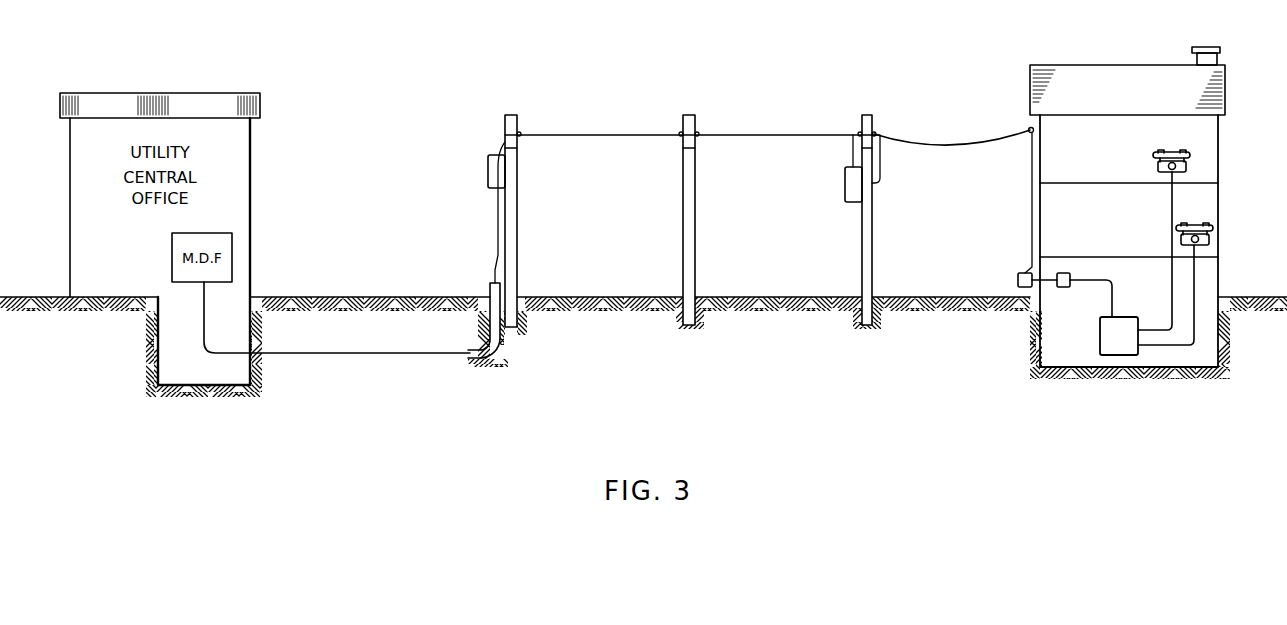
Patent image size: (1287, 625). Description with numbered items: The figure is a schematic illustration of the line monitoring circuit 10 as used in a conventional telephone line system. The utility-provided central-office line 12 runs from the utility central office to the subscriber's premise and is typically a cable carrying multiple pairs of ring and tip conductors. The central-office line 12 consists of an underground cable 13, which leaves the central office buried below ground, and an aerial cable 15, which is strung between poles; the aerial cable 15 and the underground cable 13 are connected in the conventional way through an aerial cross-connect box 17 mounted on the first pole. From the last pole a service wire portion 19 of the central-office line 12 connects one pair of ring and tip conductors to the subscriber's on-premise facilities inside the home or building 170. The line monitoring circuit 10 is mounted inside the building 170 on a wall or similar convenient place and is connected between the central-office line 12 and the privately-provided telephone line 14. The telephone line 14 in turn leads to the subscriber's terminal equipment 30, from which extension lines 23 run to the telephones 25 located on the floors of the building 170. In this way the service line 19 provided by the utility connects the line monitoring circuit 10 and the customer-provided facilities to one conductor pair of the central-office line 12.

The line monitoring circuit 10 is at (1063, 287).
The central-office line 12 is at (776, 129).
The underground cable 13 is at (370, 354).
The telephone line 14 is at (1088, 273).
The aerial cable 15 is at (604, 135).
The aerial cross-connect box 17 is at (488, 171).
The service wire portion 19 is at (934, 140).
The extension lines 23 is at (1170, 273).
The telephones 25 is at (1190, 165).
The terminal equipment 30 is at (1128, 348).
The home or building 170 is at (1098, 65).